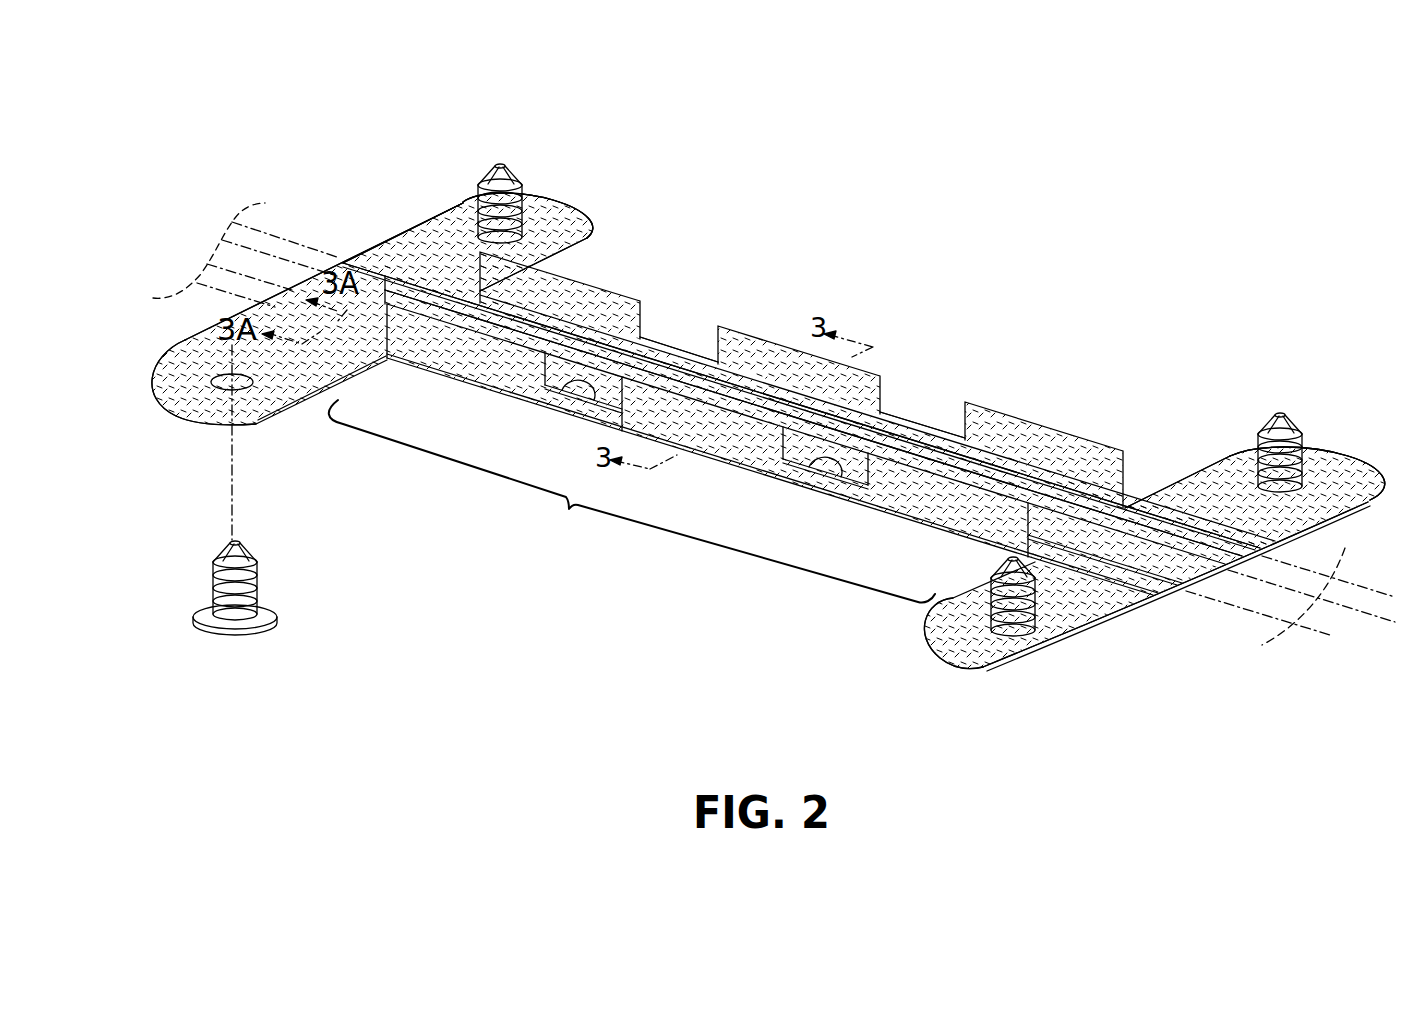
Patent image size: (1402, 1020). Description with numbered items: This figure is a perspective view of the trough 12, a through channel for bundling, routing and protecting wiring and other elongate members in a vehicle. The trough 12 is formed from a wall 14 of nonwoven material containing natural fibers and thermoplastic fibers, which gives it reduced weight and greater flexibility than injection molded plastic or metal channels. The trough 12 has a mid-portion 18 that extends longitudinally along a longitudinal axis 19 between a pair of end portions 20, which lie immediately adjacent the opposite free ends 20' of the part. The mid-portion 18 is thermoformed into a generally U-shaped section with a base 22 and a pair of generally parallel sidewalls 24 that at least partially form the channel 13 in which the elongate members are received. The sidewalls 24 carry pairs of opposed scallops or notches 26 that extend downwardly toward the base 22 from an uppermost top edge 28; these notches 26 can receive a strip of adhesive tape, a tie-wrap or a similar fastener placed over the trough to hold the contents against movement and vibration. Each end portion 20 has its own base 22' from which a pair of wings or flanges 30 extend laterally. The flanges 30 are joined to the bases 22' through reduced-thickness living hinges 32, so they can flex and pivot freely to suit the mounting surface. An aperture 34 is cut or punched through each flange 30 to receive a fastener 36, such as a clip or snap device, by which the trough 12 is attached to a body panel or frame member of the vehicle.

The trough 12 is at (978, 290).
The channel 13 is at (1140, 565).
The wall 14 is at (975, 400).
The mid-portion 18 is at (632, 501).
The longitudinal axis 19 is at (1352, 608).
The end portions 20 is at (577, 521).
The free ends 20' is at (869, 352).
The base 22 is at (813, 423).
The base 22' is at (800, 365).
The sidewalls 24 is at (1024, 418).
The notches 26 is at (672, 343).
The top edge 28 is at (616, 286).
The flanges 30 is at (563, 204).
The living hinges 32 is at (293, 320).
The aperture 34 is at (225, 378).
The fastener 36 is at (518, 166).